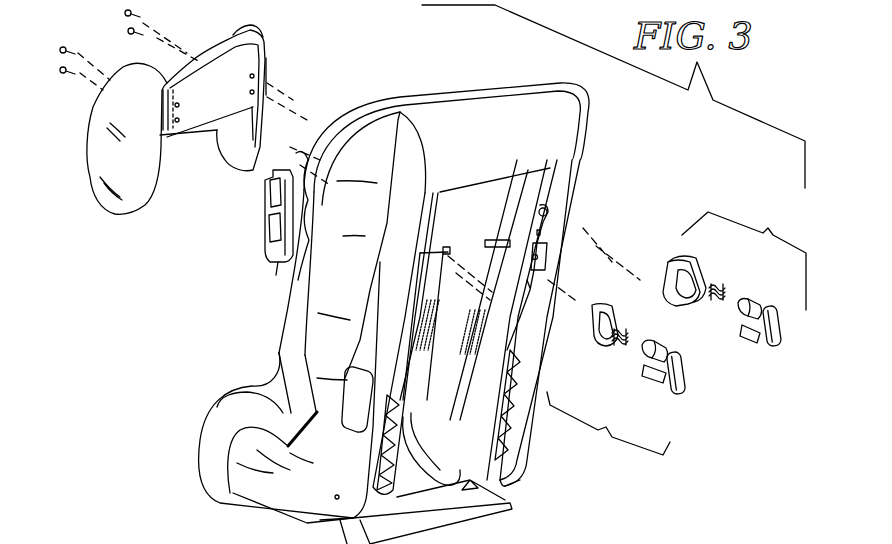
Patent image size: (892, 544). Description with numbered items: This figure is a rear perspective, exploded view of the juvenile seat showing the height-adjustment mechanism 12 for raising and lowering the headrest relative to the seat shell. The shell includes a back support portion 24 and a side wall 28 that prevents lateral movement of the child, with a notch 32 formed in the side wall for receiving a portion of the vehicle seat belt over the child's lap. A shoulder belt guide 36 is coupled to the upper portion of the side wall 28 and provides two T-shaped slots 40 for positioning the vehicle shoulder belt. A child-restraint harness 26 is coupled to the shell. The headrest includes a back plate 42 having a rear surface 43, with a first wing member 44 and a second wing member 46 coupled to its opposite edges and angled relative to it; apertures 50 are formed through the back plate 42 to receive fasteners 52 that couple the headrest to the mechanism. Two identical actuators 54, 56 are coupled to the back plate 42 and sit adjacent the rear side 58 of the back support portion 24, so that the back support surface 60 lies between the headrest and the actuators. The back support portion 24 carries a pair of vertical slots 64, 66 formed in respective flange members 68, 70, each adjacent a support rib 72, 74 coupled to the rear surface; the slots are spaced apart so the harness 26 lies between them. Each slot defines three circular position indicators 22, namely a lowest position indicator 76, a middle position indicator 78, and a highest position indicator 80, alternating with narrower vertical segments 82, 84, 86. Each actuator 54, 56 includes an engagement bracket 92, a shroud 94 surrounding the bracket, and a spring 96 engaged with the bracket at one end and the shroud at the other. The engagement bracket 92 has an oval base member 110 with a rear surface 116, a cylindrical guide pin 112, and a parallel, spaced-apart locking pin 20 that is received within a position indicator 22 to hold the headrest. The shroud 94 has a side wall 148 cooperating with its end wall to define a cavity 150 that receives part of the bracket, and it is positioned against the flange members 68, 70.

The height-adjustment mechanism 12 is at (550, 168).
The locking pin 20 is at (758, 296).
The position indicator 22 is at (556, 207).
The back support portion 24 is at (467, 113).
The child-restraint harness 26 is at (430, 304).
The side wall 28 is at (326, 355).
The notch 32 is at (283, 413).
The shoulder belt guide 36 is at (256, 212).
The T-shaped slot 40 is at (268, 183).
The back plate 42 is at (211, 44).
The rear surface 43 is at (270, 64).
The first wing member 44 is at (150, 183).
The second wing member 46 is at (268, 31).
The apertures 50 is at (175, 120).
The fasteners 52 is at (120, 13).
The actuator 54 is at (608, 425).
The actuator 56 is at (766, 230).
The rear side 58 is at (507, 195).
The back support surface 60 is at (498, 211).
The vertical slot 64 is at (436, 196).
The vertical slot 66 is at (553, 102).
The flange member 68 is at (423, 263).
The flange member 70 is at (548, 182).
The support rib 72 is at (395, 228).
The support rib 74 is at (533, 362).
The lowest position indicator 76 is at (530, 288).
The middle position indicator 78 is at (547, 268).
The highest position indicator 80 is at (549, 214).
The vertical segment 82 is at (520, 322).
The vertical segment 84 is at (565, 283).
The vertical segment 86 is at (537, 232).
The engagement bracket 92 is at (763, 352).
The shroud 94 is at (704, 272).
The spring 96 is at (730, 290).
The base member 110 is at (769, 312).
The guide pin 112 is at (745, 341).
The rear surface 116 is at (765, 350).
The side wall 148 is at (668, 262).
The cavity 150 is at (690, 298).